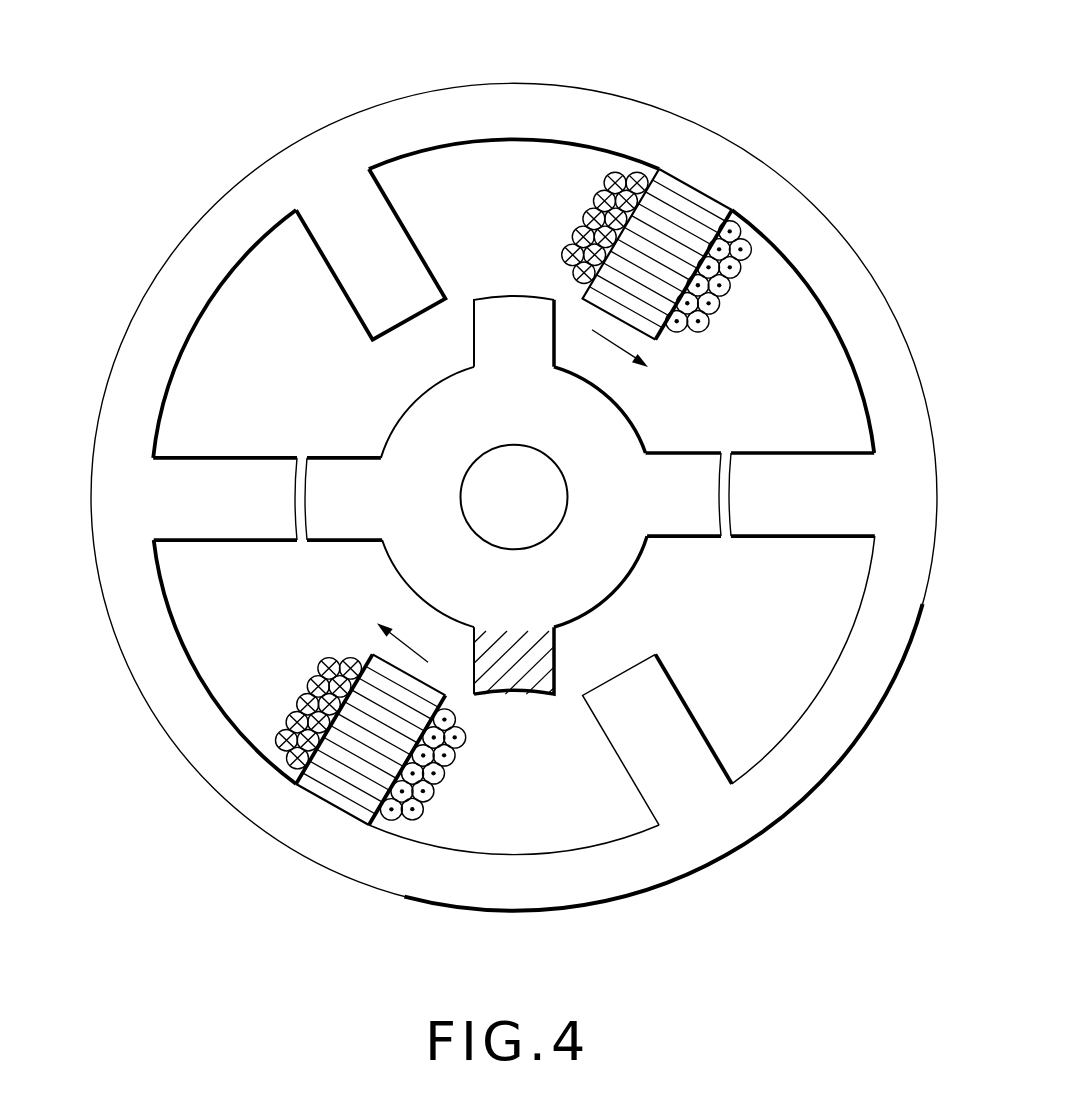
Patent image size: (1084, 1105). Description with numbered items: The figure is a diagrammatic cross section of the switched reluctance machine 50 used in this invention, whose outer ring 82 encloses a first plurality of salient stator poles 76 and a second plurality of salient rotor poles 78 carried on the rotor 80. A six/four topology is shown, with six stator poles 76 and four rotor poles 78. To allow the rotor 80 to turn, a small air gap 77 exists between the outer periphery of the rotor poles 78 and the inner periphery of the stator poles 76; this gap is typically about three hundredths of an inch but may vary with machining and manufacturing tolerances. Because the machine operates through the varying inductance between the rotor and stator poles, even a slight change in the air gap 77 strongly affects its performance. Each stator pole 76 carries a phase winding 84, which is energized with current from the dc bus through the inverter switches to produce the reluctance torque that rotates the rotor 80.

The motor 50 is at (773, 122).
The salient stator poles 76 is at (688, 203).
The air gap 77 is at (298, 457).
The salient rotor poles 78 is at (472, 330).
The rotor 80 is at (463, 458).
The outer ring 82 is at (377, 105).
The stator pole phase winding 84 is at (740, 272).